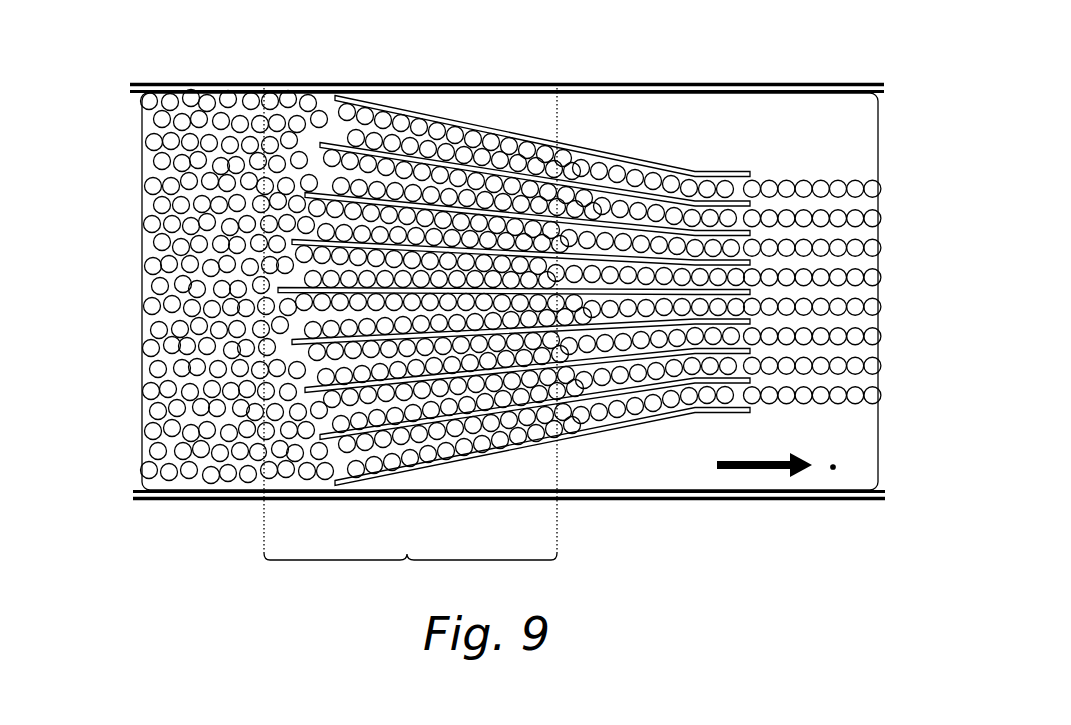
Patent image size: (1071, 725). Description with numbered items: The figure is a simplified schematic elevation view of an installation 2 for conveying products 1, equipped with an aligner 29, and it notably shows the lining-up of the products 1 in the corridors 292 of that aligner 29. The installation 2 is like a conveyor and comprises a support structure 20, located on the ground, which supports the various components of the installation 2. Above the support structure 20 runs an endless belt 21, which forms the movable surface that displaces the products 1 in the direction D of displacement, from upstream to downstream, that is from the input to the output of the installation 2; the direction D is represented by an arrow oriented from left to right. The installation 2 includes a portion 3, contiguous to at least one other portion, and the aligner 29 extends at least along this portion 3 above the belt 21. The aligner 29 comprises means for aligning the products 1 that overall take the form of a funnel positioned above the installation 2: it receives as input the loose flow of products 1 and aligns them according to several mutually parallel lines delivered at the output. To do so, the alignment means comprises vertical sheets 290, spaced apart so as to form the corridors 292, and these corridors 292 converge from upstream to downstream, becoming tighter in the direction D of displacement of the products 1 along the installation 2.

The products 1 is at (165, 239).
The installation 2 is at (460, 359).
The other portion 3 is at (407, 562).
The support structure 20 is at (705, 500).
The belt 21 is at (833, 468).
The direction of displacement D is at (763, 468).
The aligner 29 is at (538, 243).
The vertical sheets 290 is at (708, 172).
The corridors 292 is at (748, 190).